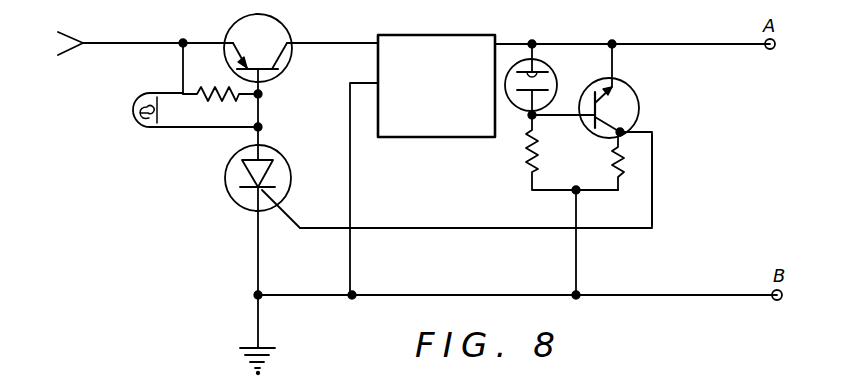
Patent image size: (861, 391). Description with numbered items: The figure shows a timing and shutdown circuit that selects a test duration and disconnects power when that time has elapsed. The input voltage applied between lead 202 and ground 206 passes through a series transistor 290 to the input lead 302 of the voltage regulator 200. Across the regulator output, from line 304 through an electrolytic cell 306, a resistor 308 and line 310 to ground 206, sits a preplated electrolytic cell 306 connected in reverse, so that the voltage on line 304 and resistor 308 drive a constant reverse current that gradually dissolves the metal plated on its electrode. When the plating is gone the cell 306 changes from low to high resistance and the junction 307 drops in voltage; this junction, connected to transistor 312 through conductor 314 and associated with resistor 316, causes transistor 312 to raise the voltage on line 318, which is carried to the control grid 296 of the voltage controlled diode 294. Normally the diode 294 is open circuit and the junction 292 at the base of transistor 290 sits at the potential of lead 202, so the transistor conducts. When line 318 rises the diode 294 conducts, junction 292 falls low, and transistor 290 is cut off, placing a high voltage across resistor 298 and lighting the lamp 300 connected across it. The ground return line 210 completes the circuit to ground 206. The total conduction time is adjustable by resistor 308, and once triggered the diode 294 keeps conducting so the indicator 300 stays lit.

The voltage regulator 200 is at (433, 33).
The lead 202 is at (123, 42).
The ground 206 is at (257, 333).
The ground return line 210 is at (418, 292).
The transistor 290 is at (283, 22).
The junction 292 is at (262, 95).
The voltage controlled diode 294 is at (283, 155).
The control grid 296 is at (292, 212).
The resistor 298 is at (214, 97).
The lamp 300 is at (143, 133).
The input lead 302 is at (177, 63).
The line 304 is at (352, 160).
The electrolytic cell 306 is at (560, 90).
The junction 307 is at (527, 120).
The resistor 308 is at (522, 160).
The line 310 is at (576, 258).
The transistor 312 is at (638, 100).
The conductor 314 is at (560, 115).
The resistor 316 is at (613, 162).
The line 318 is at (653, 173).